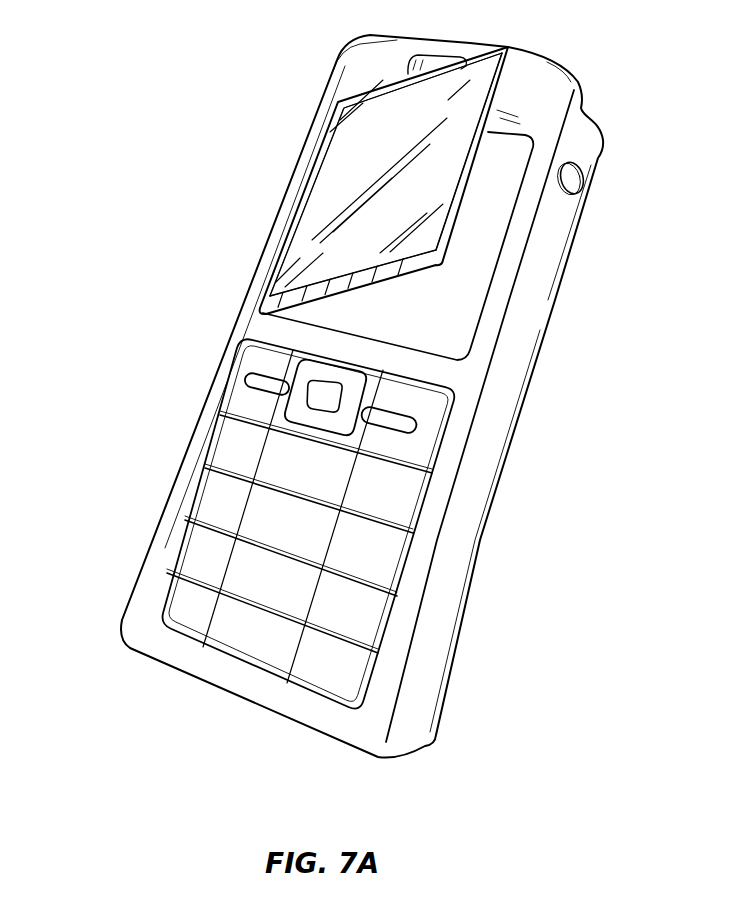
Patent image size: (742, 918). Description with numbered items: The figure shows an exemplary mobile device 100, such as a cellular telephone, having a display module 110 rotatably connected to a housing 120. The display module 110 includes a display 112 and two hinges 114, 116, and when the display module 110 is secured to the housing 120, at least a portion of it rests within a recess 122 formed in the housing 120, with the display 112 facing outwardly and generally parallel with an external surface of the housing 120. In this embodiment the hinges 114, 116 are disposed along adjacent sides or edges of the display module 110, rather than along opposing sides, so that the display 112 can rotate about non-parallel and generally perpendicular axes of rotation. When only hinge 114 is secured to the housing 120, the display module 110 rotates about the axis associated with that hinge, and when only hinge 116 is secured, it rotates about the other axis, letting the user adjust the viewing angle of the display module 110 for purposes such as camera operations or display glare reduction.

The mobile device 100 is at (172, 228).
The display module 110 is at (475, 222).
The display 112 is at (367, 170).
The hinge 114 is at (303, 187).
The hinge 116 is at (362, 287).
The housing 120 is at (456, 537).
The recess 122 is at (440, 316).